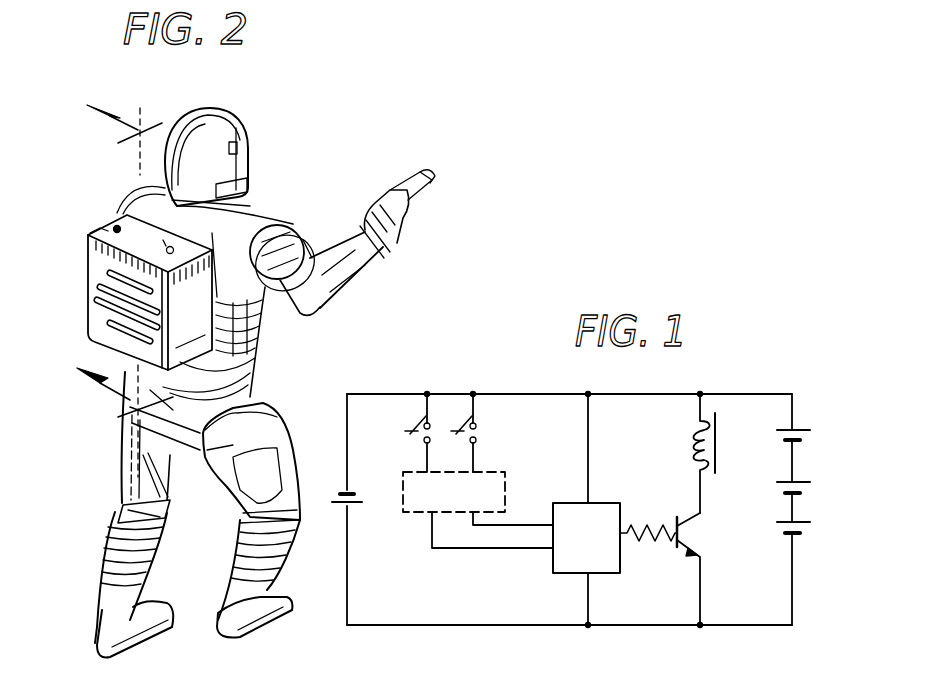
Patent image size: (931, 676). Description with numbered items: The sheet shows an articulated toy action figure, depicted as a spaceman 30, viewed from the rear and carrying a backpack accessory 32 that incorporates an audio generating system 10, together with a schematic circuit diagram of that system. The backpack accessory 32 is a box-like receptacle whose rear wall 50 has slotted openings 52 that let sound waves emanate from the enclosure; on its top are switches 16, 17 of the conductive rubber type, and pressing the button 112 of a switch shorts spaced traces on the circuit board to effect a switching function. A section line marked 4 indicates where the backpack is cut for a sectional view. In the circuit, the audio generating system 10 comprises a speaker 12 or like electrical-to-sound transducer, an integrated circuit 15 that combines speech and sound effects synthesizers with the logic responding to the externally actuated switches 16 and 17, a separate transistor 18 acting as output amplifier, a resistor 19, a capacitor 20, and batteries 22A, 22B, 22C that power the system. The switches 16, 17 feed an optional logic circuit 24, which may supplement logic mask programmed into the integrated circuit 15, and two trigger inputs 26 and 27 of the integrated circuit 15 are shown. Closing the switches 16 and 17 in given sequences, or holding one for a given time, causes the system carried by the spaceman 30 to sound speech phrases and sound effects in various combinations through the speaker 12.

In FIG. 1, the audio generating system 10 is at (690, 382).
In FIG. 1, the speaker 12 is at (690, 446).
In FIG. 1, the integrated circuit 15 is at (568, 573).
In FIG. 2, the switch 16 is at (90, 228).
In FIG. 1, the switch 16 is at (408, 422).
In FIG. 2, the switch 17 is at (168, 247).
In FIG. 1, the switch 17 is at (453, 422).
In FIG. 1, the transistor 18 is at (675, 522).
In FIG. 1, the resistor 19 is at (652, 540).
In FIG. 1, the capacitor 20 is at (362, 499).
In FIG. 1, the battery 22A is at (777, 431).
In FIG. 1, the battery 22B is at (772, 484).
In FIG. 1, the battery 22C is at (780, 527).
In FIG. 1, the optional logic circuit 24 is at (512, 463).
In FIG. 1, the trigger input 26 is at (553, 524).
In FIG. 1, the trigger input 27 is at (553, 552).
In FIG. 2, the toy action figure 30 is at (305, 210).
In FIG. 2, the backpack accessory 32 is at (84, 277).
In FIG. 2, the rear wall 50 is at (84, 290).
In FIG. 2, the slotted openings 52 is at (87, 328).
In FIG. 2, the button 112 is at (116, 228).
In FIG. 2, the section line 4- 4 is at (106, 282).